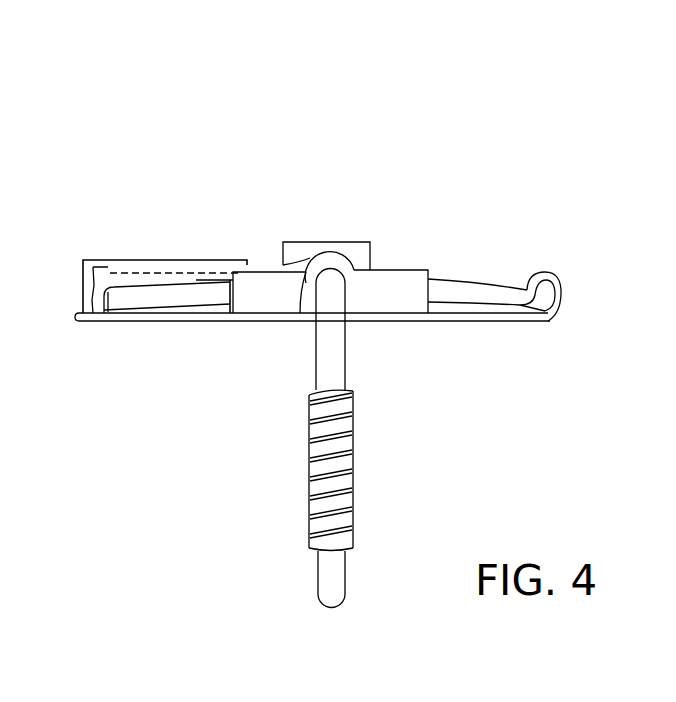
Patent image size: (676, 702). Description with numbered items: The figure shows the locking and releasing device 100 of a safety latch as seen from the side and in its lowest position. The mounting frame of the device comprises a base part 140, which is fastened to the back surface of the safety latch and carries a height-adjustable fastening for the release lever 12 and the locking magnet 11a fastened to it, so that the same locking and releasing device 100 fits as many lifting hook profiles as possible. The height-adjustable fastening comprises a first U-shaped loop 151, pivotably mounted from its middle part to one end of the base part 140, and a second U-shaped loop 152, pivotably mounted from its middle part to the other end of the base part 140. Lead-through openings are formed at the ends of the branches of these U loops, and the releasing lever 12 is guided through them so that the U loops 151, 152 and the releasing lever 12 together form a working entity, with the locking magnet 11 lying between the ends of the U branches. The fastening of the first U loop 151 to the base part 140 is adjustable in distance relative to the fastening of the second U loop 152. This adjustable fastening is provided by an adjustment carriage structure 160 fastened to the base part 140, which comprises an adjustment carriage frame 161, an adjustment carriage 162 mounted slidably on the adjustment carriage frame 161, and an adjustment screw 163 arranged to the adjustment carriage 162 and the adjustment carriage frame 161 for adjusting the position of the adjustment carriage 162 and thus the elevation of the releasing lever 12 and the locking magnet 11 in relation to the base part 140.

The locking and releasing device 100 is at (228, 458).
The locking magnet 11 is at (352, 250).
The locking magnet 11a is at (310, 242).
The release lever 12 is at (325, 580).
The base part 140 is at (253, 322).
The first U-shaped loop 151 is at (162, 312).
The second U-shaped loop 152 is at (507, 303).
The adjustment carriage structure 160 is at (155, 262).
The adjustment carriage frame 161 is at (188, 261).
The adjustment carriage 162 is at (108, 262).
The adjustment screw 163 is at (205, 277).